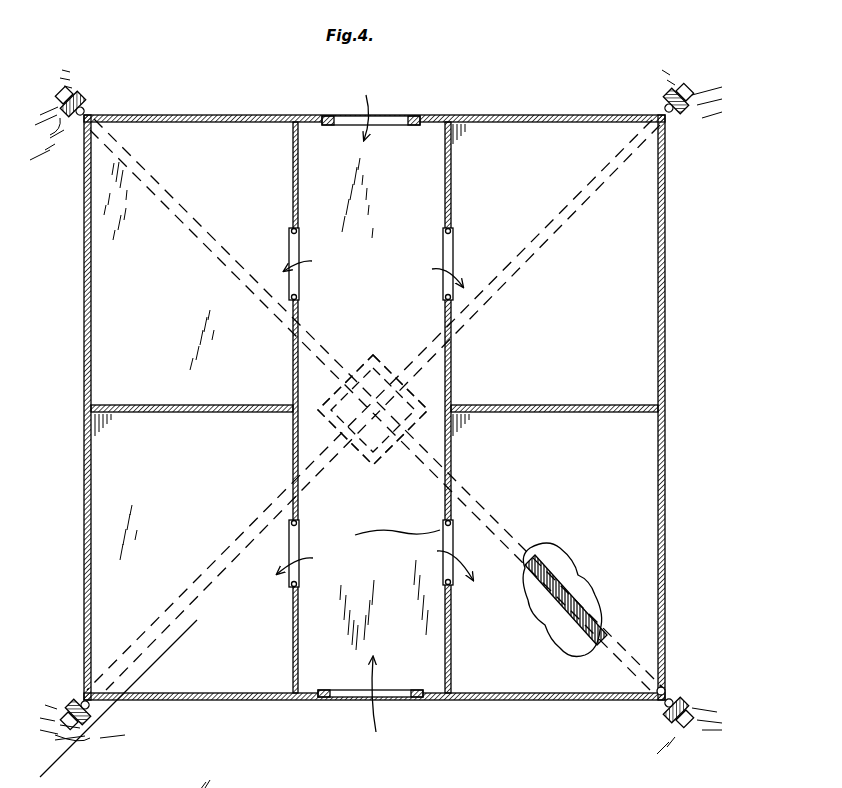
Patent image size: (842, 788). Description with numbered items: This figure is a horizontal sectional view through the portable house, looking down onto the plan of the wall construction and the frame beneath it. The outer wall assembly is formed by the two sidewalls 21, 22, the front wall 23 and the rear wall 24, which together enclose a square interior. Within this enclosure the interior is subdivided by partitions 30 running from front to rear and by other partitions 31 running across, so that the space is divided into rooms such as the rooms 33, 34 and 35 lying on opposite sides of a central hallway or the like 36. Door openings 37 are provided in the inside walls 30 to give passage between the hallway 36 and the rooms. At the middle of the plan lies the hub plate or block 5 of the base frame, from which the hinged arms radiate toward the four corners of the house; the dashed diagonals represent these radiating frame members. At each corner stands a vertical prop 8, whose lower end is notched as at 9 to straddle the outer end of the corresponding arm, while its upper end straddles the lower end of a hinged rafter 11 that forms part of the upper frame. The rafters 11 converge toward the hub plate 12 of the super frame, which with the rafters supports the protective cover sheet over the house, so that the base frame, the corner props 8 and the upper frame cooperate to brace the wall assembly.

The hub plate or block 5 is at (378, 352).
The vertical props 8 is at (85, 103).
The notches 9 is at (181, 640).
The hinged rafters 11 is at (582, 612).
The hub plate 12 is at (672, 690).
The sidewall 21 is at (84, 518).
The sidewall 22 is at (667, 470).
The front wall 23 is at (250, 700).
The rear wall 24 is at (272, 115).
The partitions 30 is at (452, 385).
The other partitions 31 is at (234, 405).
The room 33 is at (192, 263).
The room 34 is at (554, 263).
The room 35 is at (554, 552).
The hallway 36 is at (373, 425).
The door openings 37 is at (290, 262).